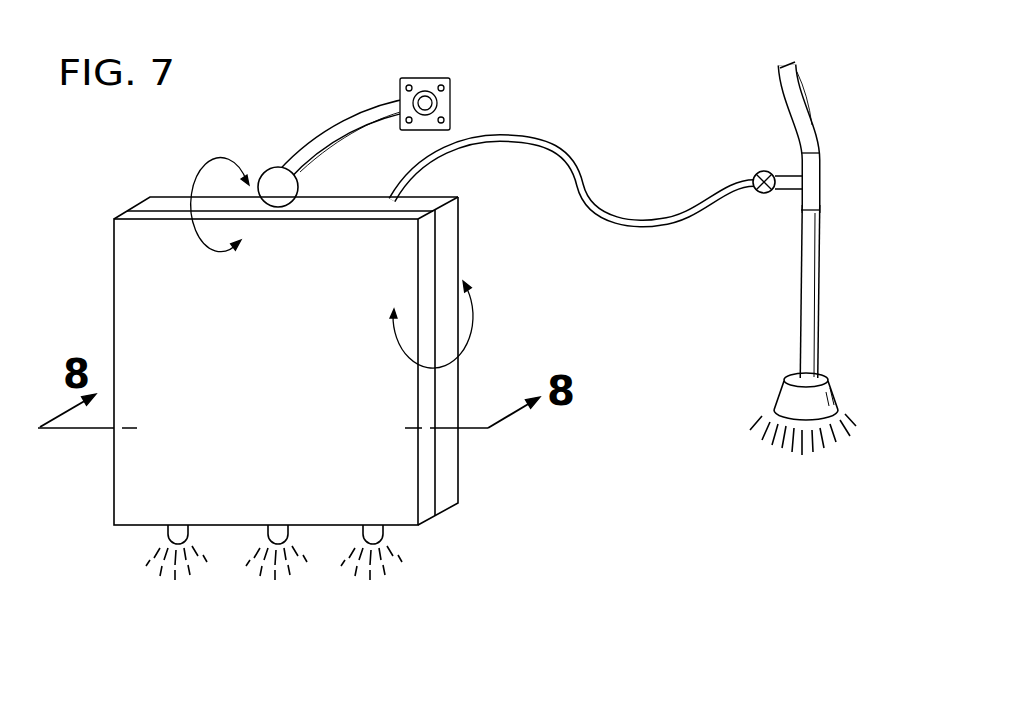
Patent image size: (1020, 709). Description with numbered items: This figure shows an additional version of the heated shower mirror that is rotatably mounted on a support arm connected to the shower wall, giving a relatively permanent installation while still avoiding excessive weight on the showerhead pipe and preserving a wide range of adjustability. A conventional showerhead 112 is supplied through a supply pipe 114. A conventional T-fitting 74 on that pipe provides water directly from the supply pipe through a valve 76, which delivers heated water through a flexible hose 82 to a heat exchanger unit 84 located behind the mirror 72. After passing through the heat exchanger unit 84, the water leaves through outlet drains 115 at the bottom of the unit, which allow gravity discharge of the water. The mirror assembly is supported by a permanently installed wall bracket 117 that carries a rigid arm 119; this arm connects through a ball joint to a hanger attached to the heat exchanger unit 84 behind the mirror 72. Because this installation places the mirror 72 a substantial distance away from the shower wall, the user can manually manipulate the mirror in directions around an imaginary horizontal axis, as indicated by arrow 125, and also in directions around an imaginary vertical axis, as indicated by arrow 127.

The mirror 72 is at (293, 371).
The T-fitting 74 is at (812, 200).
The valve 76 is at (763, 171).
The flexible hose 82 is at (587, 192).
The heat exchanger unit 84 is at (447, 266).
The showerhead 112 is at (830, 373).
The supply pipe 114 is at (822, 130).
The outlet drains 115 is at (385, 530).
The wall bracket 117 is at (410, 76).
The rigid arm 119 is at (328, 128).
The arrow 125 is at (226, 128).
The arrow 127 is at (476, 330).